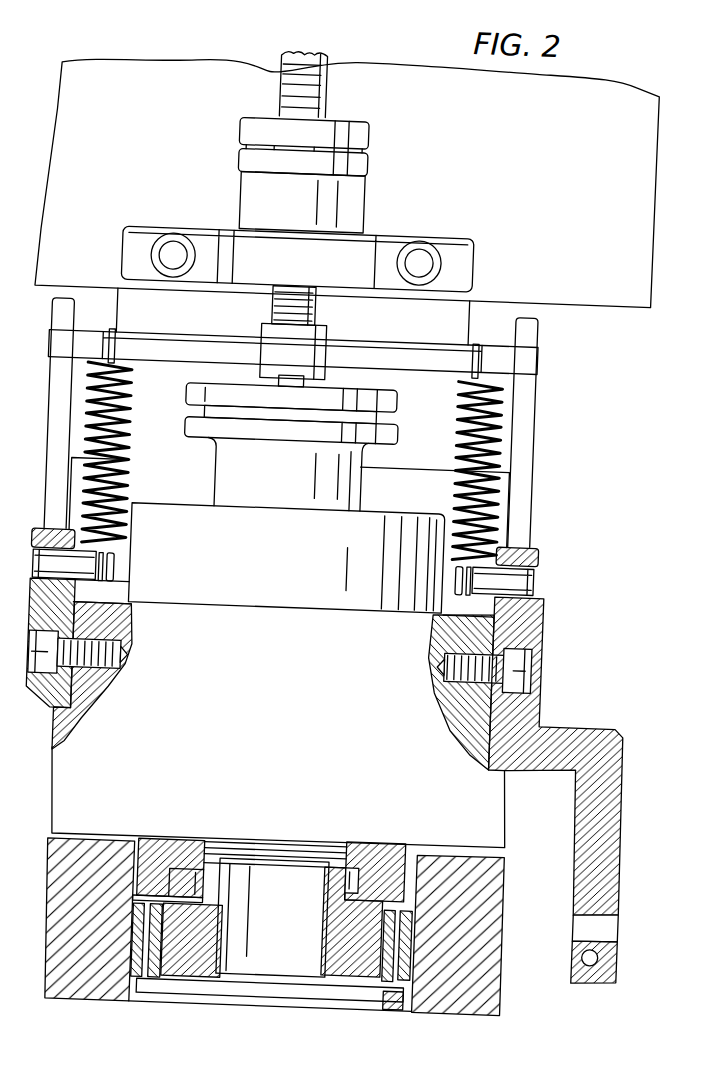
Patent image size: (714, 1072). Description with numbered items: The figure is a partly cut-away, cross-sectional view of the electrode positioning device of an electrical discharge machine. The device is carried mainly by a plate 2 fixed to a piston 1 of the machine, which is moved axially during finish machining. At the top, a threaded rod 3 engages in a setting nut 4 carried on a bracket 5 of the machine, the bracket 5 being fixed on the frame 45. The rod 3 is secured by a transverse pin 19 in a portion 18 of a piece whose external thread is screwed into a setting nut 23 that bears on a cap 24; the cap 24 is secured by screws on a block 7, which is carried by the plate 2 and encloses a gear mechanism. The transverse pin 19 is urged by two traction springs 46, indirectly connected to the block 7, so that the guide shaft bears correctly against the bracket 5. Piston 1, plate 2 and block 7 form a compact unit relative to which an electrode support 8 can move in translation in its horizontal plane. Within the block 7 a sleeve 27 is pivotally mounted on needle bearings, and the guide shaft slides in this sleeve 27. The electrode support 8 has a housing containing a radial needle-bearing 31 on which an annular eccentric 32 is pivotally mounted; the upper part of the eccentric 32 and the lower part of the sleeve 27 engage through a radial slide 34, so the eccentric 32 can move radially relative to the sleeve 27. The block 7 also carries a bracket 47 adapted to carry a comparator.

The piston 1 is at (269, 415).
The plate 2 is at (434, 507).
The threaded rod 3 is at (262, 63).
The setting nut 4 is at (352, 167).
The bracket 5 is at (436, 247).
The block 7 is at (267, 714).
The electrode support 8 is at (510, 937).
The portion 18 is at (260, 340).
The transverse pin 19 is at (55, 353).
The setting nut 23 is at (290, 448).
The cap 24 is at (286, 558).
The sleeve 27 is at (198, 848).
The radial needle-bearing 31 is at (429, 998).
The eccentric 32 is at (338, 968).
The radial slide 34 is at (371, 867).
The frame 45 is at (347, 179).
The traction spring 46 is at (123, 437).
The bracket 47 is at (603, 731).